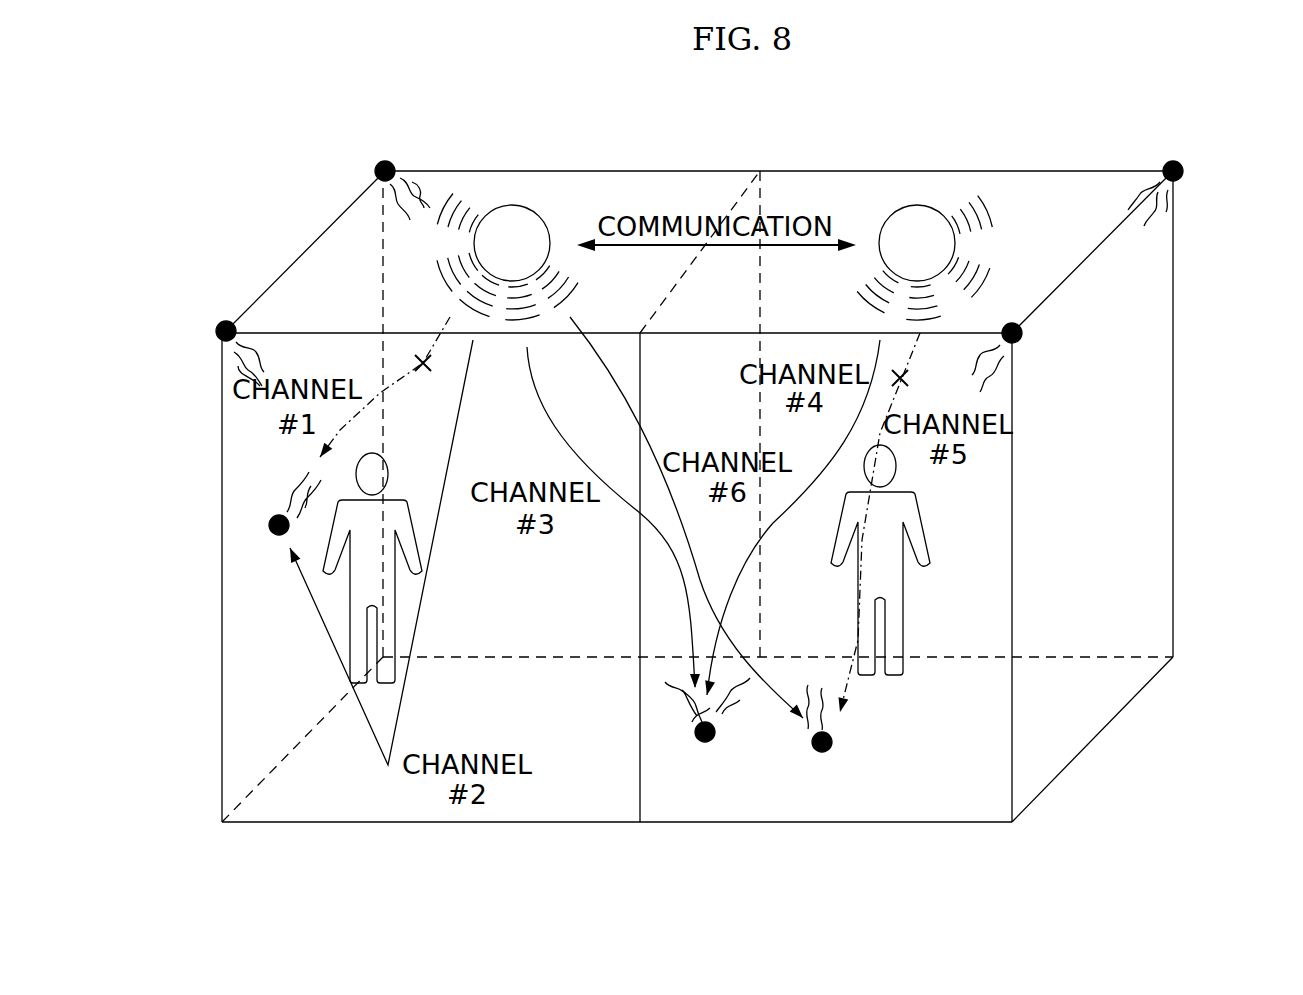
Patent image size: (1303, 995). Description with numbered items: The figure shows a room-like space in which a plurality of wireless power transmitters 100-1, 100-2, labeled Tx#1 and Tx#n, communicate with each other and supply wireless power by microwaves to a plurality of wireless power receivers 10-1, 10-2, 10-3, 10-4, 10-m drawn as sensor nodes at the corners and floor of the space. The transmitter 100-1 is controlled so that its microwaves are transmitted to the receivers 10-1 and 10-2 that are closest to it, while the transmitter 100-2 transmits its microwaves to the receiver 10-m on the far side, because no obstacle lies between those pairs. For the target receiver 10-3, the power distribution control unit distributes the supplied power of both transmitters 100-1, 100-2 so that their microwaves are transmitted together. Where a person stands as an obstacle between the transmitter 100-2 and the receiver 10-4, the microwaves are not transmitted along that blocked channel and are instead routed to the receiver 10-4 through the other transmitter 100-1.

The wireless power receiver 10-1 is at (388, 163).
The wireless power receiver 10-2 is at (272, 533).
The target wireless power receiver 10-3 is at (700, 740).
The wireless power receiver 10-4 is at (823, 752).
The wireless power receiver 10-m is at (1178, 177).
The wireless power transmitter 100-1 is at (514, 205).
The wireless power transmitter 100-2 is at (916, 205).